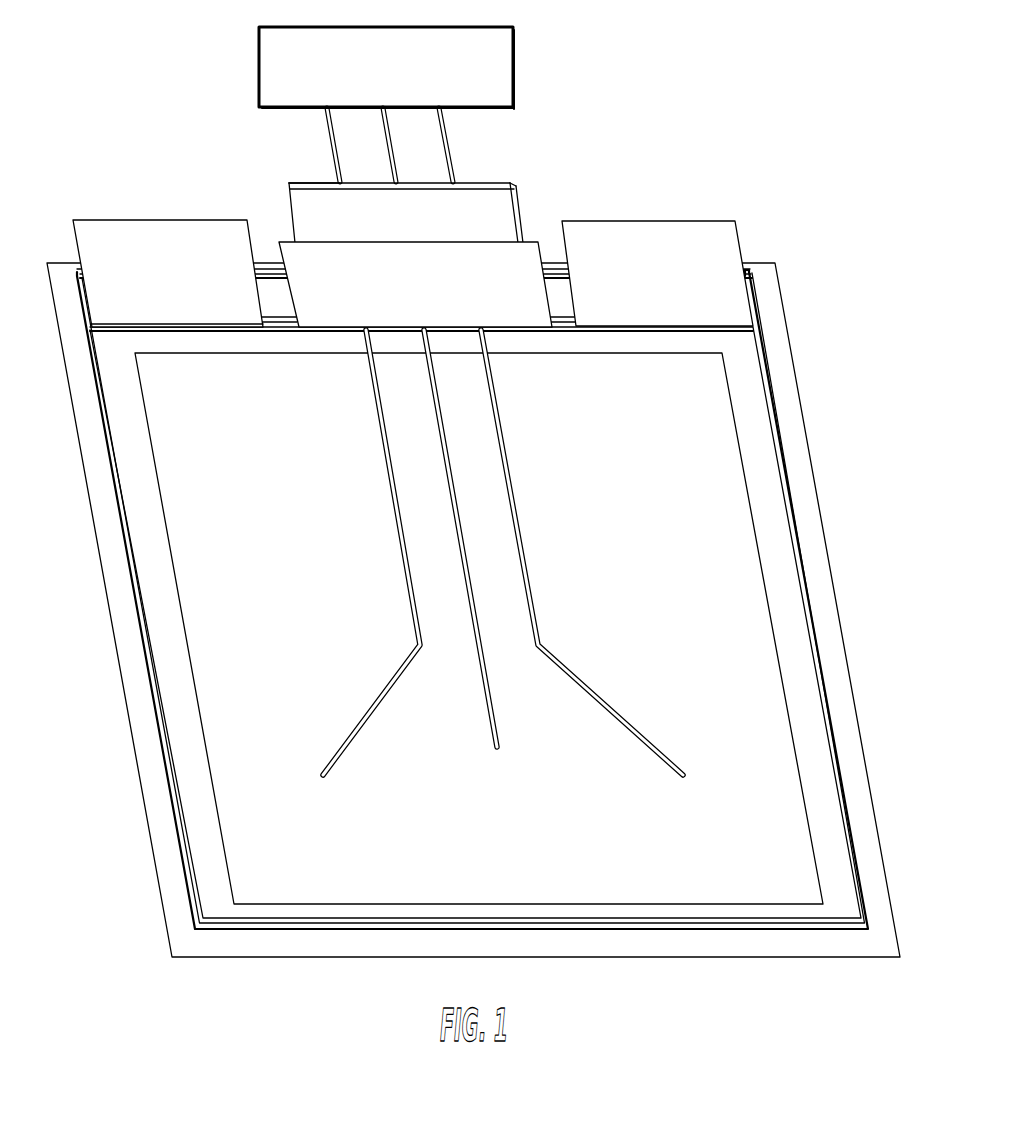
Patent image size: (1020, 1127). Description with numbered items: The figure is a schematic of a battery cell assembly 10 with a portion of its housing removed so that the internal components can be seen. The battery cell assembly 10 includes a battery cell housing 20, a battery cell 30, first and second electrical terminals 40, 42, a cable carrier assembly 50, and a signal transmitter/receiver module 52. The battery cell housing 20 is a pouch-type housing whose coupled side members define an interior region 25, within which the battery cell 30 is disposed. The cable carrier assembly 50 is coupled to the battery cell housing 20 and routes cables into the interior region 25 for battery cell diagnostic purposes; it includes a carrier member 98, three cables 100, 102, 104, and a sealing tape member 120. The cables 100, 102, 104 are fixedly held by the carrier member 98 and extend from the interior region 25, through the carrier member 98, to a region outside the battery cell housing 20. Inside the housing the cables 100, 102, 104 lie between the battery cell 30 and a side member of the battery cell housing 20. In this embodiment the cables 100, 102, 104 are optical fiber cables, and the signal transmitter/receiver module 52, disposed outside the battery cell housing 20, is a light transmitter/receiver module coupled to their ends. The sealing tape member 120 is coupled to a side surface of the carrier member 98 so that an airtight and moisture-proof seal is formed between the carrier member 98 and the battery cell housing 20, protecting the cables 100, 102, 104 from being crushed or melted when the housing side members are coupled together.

The battery cell assembly 10 is at (746, 82).
The battery cell housing 20 is at (815, 458).
The interior region 25 is at (748, 407).
The battery cell 30 is at (713, 393).
The first electrical terminal 40 is at (177, 225).
The second electrical terminal 42 is at (640, 225).
The cable carrier assembly 50 is at (522, 178).
The signal transmitter/receiver module 52 is at (514, 63).
The carrier member 98 is at (303, 182).
The cable 100 is at (365, 728).
The cable 102 is at (485, 710).
The cable 104 is at (588, 698).
The sealing tape member 120 is at (308, 257).